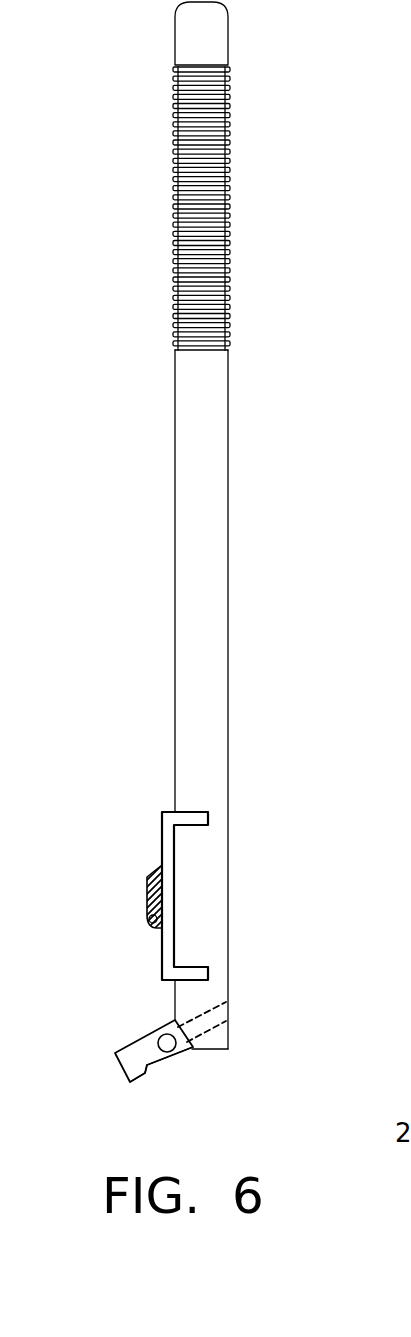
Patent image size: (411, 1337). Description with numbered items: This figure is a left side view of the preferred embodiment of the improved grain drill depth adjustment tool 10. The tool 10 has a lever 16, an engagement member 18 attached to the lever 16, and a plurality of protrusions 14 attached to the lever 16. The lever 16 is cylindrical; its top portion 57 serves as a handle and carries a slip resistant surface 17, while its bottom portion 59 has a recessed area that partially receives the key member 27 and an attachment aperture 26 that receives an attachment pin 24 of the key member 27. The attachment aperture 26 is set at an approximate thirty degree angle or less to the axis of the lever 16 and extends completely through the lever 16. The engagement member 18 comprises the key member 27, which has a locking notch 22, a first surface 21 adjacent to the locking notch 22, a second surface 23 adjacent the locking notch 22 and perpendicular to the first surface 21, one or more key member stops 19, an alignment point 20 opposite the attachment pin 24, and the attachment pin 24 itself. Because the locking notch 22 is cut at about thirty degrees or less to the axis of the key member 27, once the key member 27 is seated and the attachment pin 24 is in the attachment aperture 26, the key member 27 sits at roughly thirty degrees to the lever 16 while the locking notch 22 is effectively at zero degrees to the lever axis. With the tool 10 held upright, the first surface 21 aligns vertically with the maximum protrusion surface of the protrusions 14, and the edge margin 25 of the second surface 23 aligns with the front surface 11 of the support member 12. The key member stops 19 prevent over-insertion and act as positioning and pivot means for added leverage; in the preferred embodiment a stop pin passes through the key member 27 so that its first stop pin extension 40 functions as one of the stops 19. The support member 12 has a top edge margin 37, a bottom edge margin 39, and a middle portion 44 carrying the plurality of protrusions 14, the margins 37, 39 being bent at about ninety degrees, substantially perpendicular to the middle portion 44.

The improved grain drill depth adjustment tool 10 is at (285, 562).
The front surface 11 is at (160, 835).
The support member 12 is at (180, 877).
The plurality of protrusions 14 is at (147, 917).
The lever 16 is at (213, 437).
The slip resistant surface 17 is at (212, 233).
The engagement member 18 is at (117, 1022).
The key member stops 19 is at (143, 1050).
The alignment point 20 is at (120, 1077).
The first surface 21 is at (148, 1087).
The locking notch 22 is at (157, 1067).
The second surface 23 is at (152, 1067).
The attachment pin 24 is at (227, 1038).
The edge margin 25 is at (163, 1067).
The attachment aperture 26 is at (212, 1005).
The key member 27 is at (160, 1028).
The top edge margin 37 is at (198, 812).
The bottom edge margin 39 is at (195, 940).
The first stop pin extension 40 is at (178, 1051).
The middle portion 44 is at (180, 917).
The top portion 57 is at (212, 374).
The bottom portion 59 is at (202, 885).